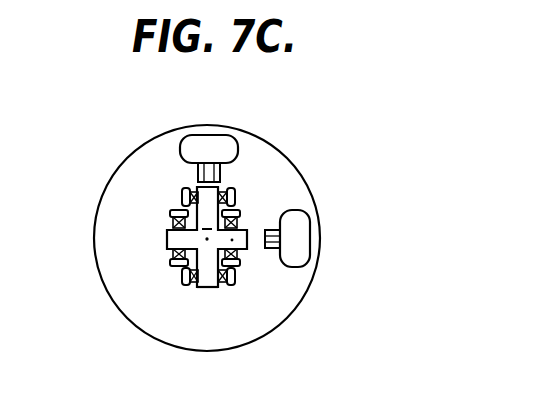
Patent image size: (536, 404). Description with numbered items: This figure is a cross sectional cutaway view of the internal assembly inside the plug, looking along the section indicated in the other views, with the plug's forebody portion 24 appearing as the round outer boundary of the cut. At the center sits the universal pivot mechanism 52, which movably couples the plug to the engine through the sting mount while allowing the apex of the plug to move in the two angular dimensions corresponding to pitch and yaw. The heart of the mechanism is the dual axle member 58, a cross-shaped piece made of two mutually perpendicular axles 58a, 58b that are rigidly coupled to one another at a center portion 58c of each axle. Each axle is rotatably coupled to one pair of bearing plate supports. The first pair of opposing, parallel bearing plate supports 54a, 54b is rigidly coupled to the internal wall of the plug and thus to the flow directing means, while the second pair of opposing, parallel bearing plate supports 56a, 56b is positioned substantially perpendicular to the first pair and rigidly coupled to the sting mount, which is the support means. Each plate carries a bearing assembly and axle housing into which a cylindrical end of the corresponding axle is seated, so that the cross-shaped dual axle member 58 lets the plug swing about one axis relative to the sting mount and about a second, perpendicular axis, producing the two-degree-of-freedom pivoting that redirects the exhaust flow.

The forebody portion 24 is at (316, 268).
The universal pivot mechanism 52 is at (163, 267).
The dual axle member 58 is at (213, 229).
The axle 58a is at (209, 288).
The axle 58b is at (168, 241).
The center portion 58c is at (238, 258).
The bearing plate support 54a is at (183, 192).
The bearing plate support 54b is at (182, 283).
The bearing plate support 56a is at (238, 268).
The bearing plate support 56b is at (242, 213).